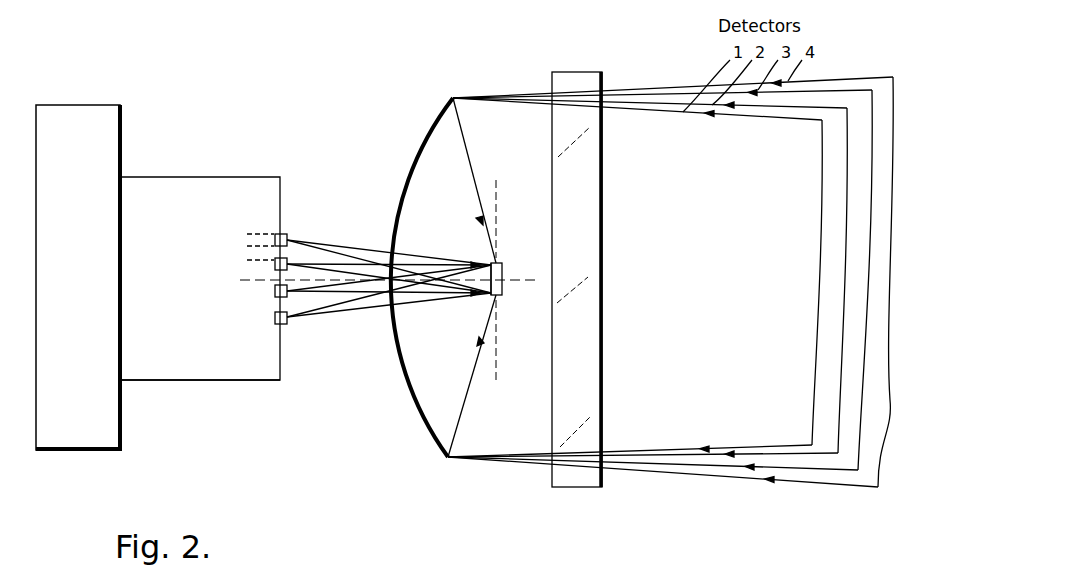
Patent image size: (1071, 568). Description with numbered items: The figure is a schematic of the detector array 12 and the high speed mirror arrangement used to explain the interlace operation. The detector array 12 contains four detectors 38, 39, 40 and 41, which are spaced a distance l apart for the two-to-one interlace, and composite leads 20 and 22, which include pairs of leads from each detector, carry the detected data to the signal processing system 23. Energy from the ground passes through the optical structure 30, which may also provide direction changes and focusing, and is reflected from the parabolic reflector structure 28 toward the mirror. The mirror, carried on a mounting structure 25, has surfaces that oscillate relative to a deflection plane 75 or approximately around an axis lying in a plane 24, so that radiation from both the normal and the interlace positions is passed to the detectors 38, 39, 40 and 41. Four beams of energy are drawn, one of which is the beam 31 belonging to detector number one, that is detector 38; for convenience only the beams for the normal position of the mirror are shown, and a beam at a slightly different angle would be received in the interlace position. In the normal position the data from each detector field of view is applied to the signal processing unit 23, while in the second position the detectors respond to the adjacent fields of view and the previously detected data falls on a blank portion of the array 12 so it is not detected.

The detector array 12 is at (279, 261).
The composite lead 20 is at (183, 177).
The composite lead 22 is at (222, 381).
The signal processing system 23 is at (68, 116).
The plane 24 is at (499, 260).
The mounting structure 25 is at (499, 298).
The parabolic reflector structure 28 is at (421, 152).
The optical structure 30 is at (567, 482).
The beam of energy 31 is at (640, 110).
The detector 38 is at (275, 325).
The detector 39 is at (275, 298).
The detector 40 is at (275, 271).
The detector 41 is at (283, 233).
The deflection plane 75 is at (617, 282).